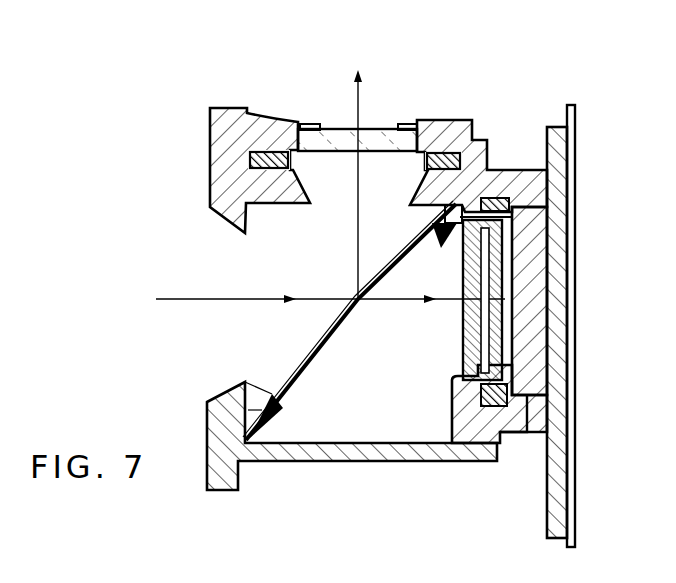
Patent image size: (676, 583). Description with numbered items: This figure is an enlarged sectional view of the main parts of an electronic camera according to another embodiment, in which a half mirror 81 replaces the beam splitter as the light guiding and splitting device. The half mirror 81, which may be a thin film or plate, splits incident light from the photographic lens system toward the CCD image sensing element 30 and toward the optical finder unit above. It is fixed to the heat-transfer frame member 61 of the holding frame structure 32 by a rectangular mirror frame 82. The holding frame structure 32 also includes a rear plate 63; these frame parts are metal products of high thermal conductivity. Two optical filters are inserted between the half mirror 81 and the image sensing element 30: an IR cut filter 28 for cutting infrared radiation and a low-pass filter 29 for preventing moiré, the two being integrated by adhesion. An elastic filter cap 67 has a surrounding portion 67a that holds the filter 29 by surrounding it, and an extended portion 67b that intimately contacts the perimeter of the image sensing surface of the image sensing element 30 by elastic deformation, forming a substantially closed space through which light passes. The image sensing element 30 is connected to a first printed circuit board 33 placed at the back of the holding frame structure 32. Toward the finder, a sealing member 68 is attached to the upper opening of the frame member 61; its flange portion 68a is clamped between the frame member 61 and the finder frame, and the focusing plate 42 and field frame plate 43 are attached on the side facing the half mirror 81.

The holding frame structure 32 is at (206, 70).
The prism frame (heat-transfer frame member) 61 is at (240, 108).
The field frame plate 43 is at (316, 124).
The focusing plate 42 is at (377, 130).
The flange portion 68a is at (290, 160).
The sealing member 68 is at (425, 163).
The rear plate 63 is at (558, 156).
The filter cap 67 is at (508, 209).
The first printed circuit board 33 is at (575, 249).
The low-pass filter 29 is at (476, 286).
The image sensing element 30 is at (538, 329).
The extended portion 67b is at (510, 366).
The IR cut filter 28 is at (463, 339).
The half mirror 81 is at (316, 350).
The rectangular mirror frame 82 is at (283, 410).
The surrounding portion 67a is at (503, 443).